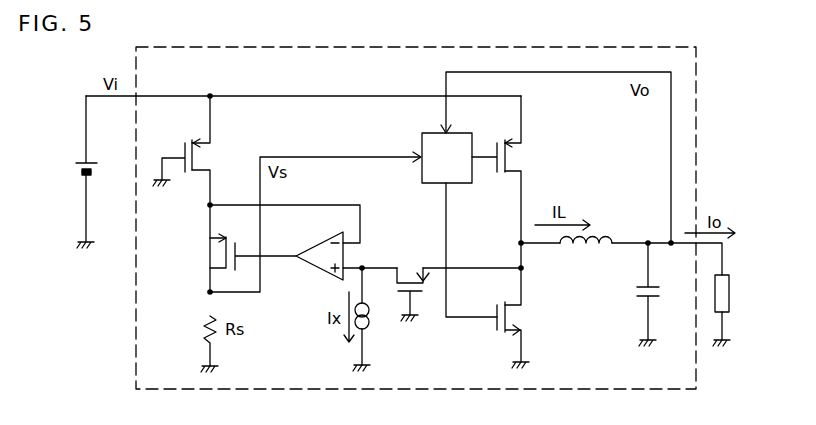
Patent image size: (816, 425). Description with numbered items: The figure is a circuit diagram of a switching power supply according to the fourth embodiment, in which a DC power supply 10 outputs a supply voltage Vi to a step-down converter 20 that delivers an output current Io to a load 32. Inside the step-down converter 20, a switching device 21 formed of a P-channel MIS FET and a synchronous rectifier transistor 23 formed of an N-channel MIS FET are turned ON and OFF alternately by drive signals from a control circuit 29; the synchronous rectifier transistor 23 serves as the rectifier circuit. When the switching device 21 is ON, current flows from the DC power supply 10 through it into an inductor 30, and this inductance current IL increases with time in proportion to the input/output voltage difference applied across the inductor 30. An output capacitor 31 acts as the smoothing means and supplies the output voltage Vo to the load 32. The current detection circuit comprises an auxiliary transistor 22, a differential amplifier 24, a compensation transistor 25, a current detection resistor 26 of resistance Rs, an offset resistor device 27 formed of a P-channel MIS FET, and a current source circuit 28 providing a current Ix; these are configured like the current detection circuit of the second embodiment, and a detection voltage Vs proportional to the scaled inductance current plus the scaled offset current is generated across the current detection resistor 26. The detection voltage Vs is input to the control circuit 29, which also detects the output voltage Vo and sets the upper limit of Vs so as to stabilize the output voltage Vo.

The DC power supply 10 is at (98, 160).
The step-down converter 20 is at (136, 292).
The switching device 21 is at (522, 158).
The auxiliary transistor 22 is at (210, 157).
The synchronous rectifier transistor 23 is at (530, 318).
The differential amplifier 24 is at (330, 275).
The compensation transistor 25 is at (210, 255).
The current detection resistor 26 is at (208, 322).
The offset resistor device 27 is at (407, 262).
The current source circuit 28 is at (370, 322).
The control circuit 29 is at (420, 147).
The inductor 30 is at (598, 238).
The output capacitor 31 is at (635, 294).
The load 32 is at (730, 276).